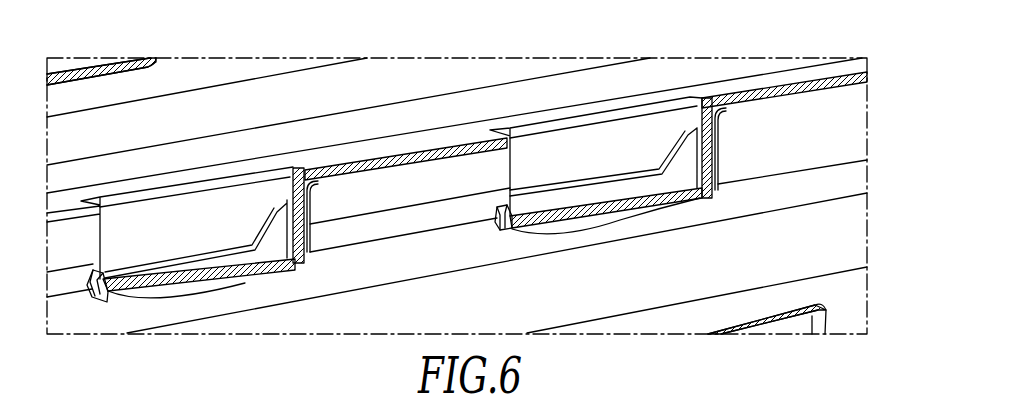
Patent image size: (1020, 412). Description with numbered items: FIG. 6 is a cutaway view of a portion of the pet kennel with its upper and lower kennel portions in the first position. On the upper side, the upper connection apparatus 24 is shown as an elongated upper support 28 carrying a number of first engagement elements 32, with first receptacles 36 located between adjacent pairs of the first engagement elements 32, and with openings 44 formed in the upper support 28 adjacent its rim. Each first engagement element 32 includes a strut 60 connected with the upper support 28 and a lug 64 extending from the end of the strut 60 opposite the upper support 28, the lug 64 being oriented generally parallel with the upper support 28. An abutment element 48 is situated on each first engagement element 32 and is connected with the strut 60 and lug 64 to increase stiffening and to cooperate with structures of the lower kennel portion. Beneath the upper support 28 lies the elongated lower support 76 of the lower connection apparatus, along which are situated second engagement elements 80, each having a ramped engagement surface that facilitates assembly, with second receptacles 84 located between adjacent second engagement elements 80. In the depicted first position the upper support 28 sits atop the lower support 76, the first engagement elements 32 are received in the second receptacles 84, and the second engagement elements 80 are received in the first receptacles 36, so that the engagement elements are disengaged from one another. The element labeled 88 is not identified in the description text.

The upper connection apparatus 24 is at (748, 78).
The upper support 28 is at (818, 96).
The first engagement element 32 is at (255, 294).
The first receptacle 36 is at (383, 258).
The opening 44 is at (84, 200).
The abutment element 48 is at (176, 264).
The strut 60 is at (310, 207).
The lug 64 is at (187, 292).
The lower support 76 is at (443, 150).
The second engagement element 80 is at (396, 240).
The second receptacle 84 is at (208, 208).
The end tab 88 is at (112, 300).